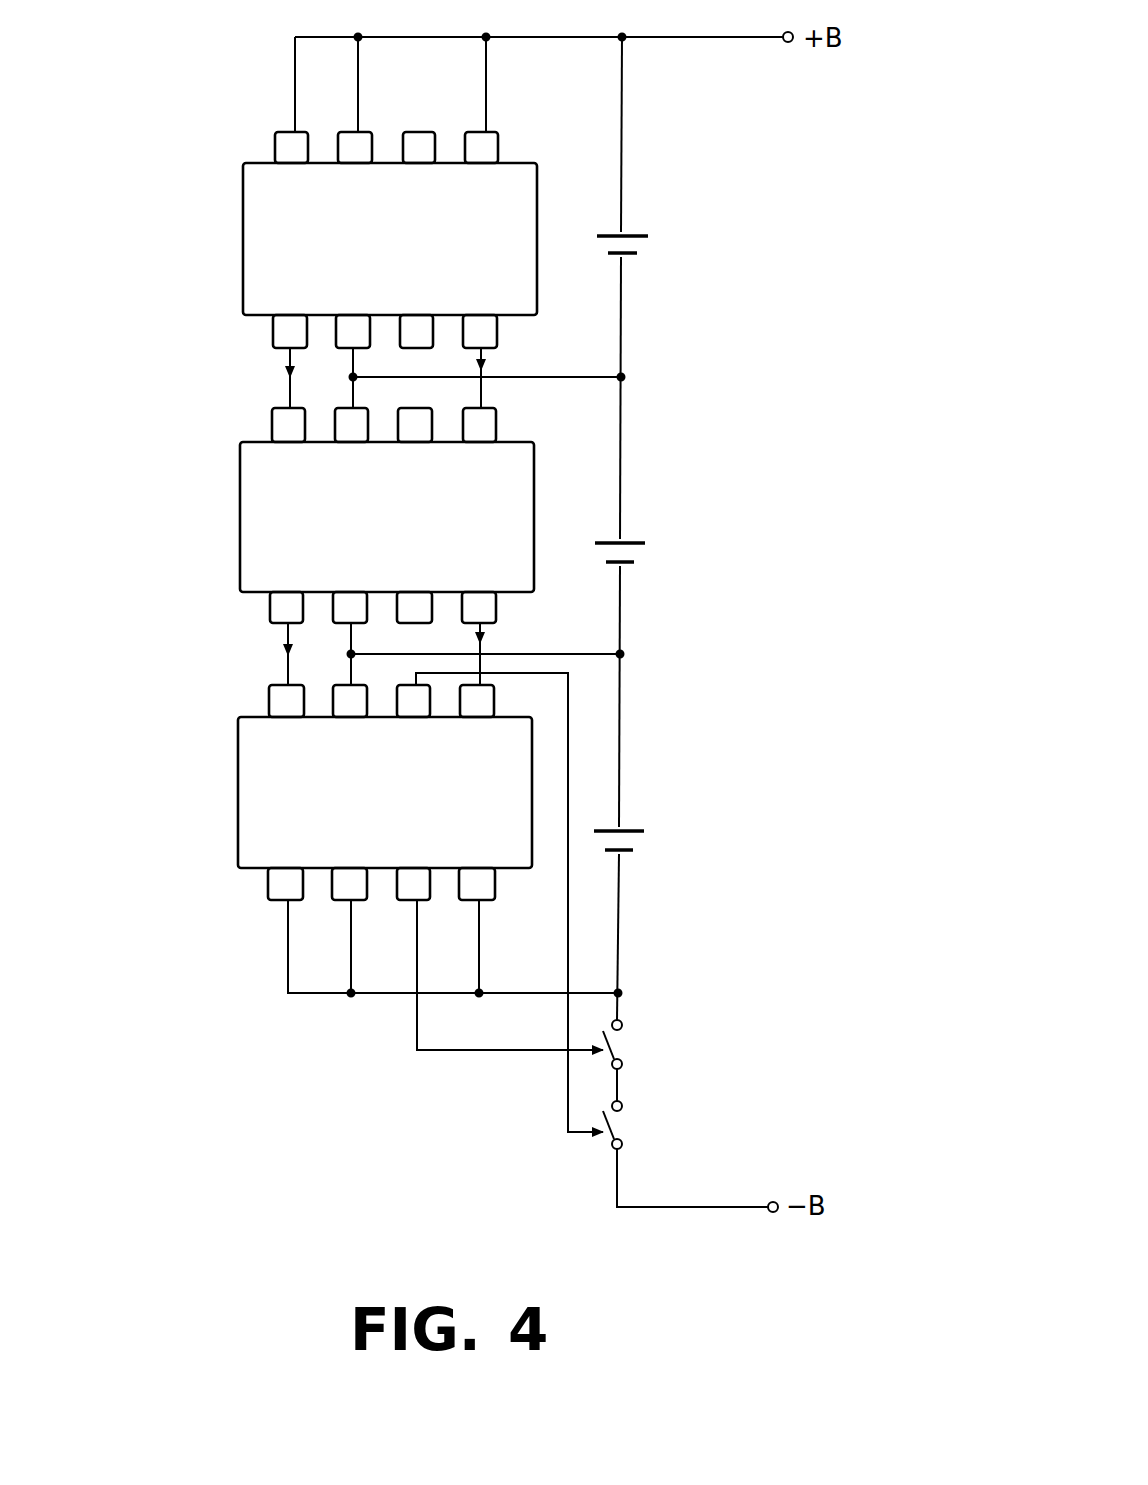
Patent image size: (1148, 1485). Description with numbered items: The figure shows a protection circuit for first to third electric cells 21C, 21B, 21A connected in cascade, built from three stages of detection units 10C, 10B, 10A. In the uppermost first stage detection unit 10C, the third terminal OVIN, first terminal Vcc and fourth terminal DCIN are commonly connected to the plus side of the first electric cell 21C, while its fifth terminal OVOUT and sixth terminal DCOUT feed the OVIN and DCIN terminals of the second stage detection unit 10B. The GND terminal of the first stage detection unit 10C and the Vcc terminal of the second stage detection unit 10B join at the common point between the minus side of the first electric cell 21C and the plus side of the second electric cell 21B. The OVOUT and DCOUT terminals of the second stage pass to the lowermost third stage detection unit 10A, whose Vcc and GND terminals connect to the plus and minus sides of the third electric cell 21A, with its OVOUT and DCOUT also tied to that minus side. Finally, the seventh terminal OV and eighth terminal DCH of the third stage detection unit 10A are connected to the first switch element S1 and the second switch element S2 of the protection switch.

The third stage detection unit 10A is at (238, 792).
The second stage detection unit 10B is at (240, 516).
The first stage detection unit 10C is at (243, 240).
The third electric cell 21A is at (654, 838).
The second electric cell 21B is at (655, 550).
The first electric cell 21C is at (658, 243).
The first switch element S1 is at (641, 1125).
The second switch element S2 is at (641, 1044).